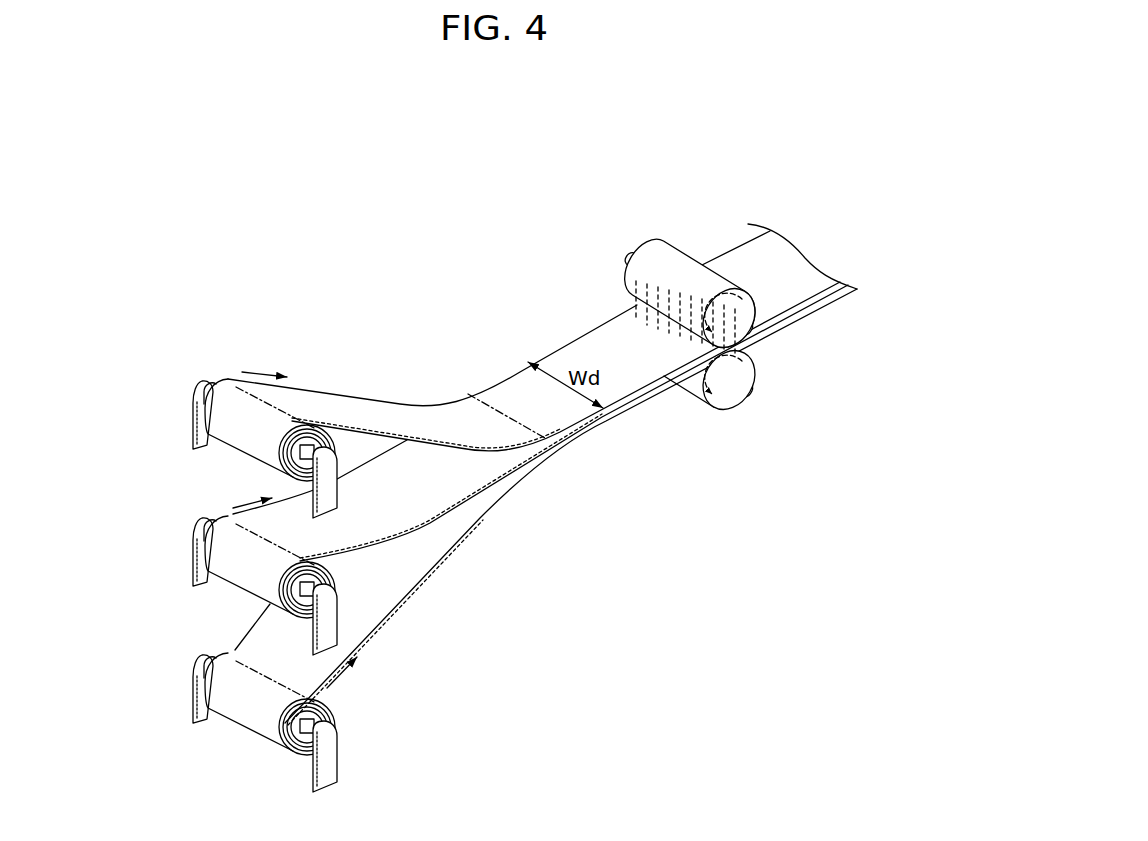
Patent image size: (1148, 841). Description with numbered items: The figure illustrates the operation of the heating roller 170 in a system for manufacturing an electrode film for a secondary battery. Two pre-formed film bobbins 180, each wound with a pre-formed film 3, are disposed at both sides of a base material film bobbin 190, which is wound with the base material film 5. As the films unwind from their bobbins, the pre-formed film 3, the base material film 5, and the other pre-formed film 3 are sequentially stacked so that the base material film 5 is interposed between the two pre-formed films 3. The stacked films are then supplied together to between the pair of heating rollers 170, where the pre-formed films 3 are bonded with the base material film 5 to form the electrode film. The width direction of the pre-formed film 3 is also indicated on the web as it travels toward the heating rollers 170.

The pre-formed film 3 is at (343, 403).
The base material film 5 is at (383, 521).
The heating roller 170 is at (670, 256).
The pre-formed film bobbin 180 is at (300, 447).
The base material film bobbin 190 is at (300, 589).